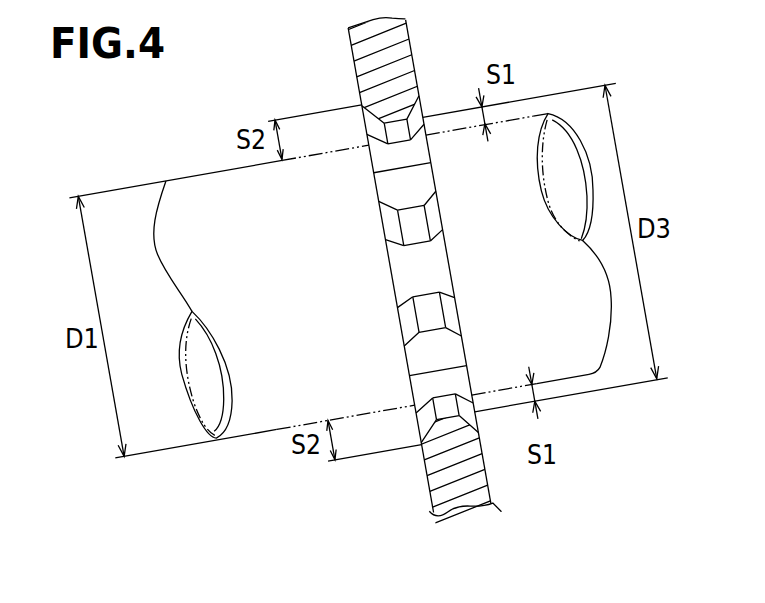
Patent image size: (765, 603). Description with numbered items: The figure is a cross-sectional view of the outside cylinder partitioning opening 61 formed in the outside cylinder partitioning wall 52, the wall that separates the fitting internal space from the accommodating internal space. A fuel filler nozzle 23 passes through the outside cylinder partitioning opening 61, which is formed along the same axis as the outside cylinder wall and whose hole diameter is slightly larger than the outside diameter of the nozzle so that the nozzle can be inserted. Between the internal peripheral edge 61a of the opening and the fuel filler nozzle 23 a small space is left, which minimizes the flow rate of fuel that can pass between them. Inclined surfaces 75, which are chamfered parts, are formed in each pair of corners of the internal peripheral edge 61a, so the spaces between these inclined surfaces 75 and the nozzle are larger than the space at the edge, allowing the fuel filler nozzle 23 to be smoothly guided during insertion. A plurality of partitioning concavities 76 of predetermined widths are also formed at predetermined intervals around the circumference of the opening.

The fuel filler nozzle 23 is at (282, 412).
The outside cylinder partitioning wall 52 is at (357, 66).
The outside cylinder partitioning opening 61 is at (413, 234).
The internal peripheral edge 61a is at (386, 148).
The inclined surface 75 is at (369, 124).
The partitioning concavity 76 is at (416, 146).